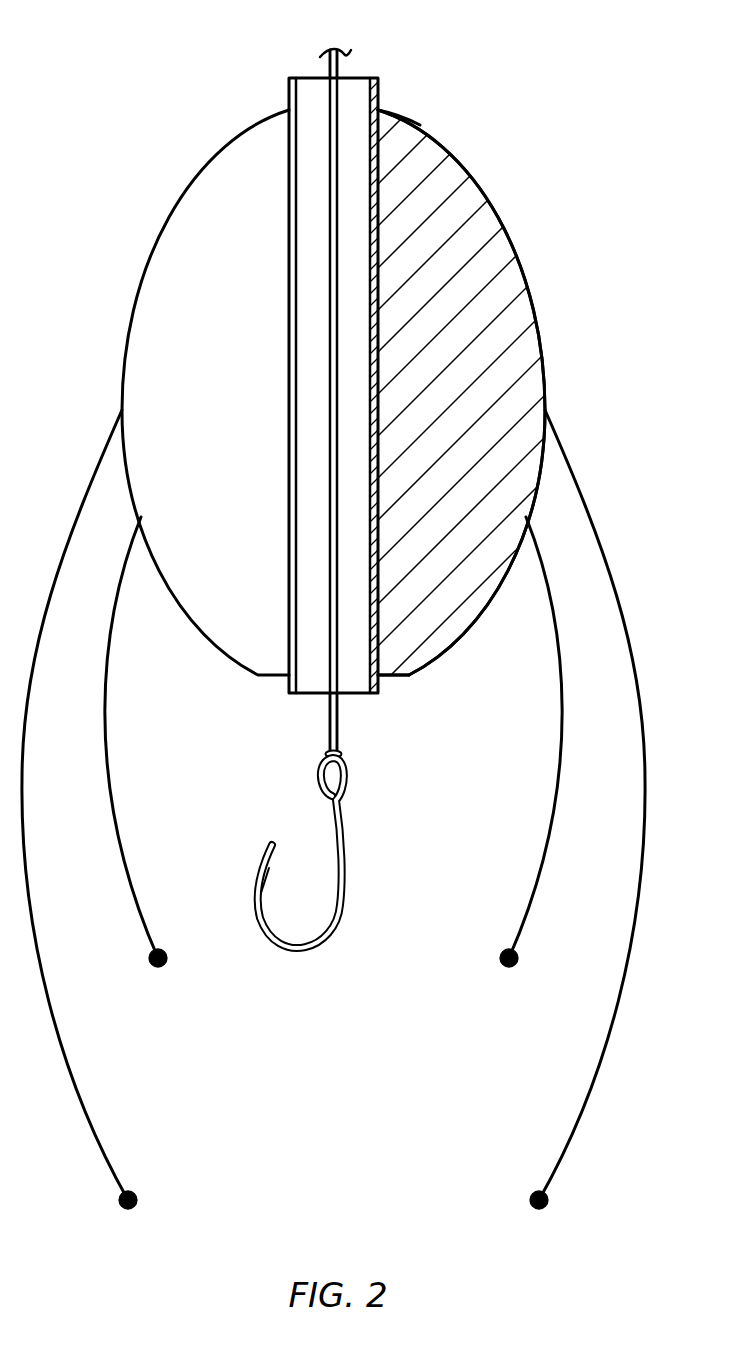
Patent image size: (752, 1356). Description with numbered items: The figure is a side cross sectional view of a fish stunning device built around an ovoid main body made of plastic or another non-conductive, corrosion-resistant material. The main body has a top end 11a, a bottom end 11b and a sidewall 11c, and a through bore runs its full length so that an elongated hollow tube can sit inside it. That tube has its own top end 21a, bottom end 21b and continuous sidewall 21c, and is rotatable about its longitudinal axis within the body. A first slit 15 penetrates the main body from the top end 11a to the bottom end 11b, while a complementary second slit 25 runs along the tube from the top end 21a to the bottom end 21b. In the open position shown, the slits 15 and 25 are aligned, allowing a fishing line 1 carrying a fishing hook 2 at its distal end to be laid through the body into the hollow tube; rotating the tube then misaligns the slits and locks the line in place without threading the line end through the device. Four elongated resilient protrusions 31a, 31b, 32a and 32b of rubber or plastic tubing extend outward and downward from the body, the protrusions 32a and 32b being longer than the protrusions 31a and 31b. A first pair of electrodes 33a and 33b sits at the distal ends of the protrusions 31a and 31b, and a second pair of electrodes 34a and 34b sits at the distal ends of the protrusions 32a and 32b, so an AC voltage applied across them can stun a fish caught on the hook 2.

The fishing line 1 is at (333, 710).
The fishing hook 2 is at (348, 868).
The top end 11a is at (393, 112).
The bottom end 11b is at (408, 677).
The sidewall 11c is at (508, 243).
The first slit 15 is at (206, 241).
The top end 21a is at (355, 78).
The bottom end 21b is at (303, 695).
The continuous sidewall 21c is at (382, 437).
The second slit 25 is at (292, 97).
The resilient protrusion 31a is at (104, 773).
The resilient protrusion 31b is at (563, 773).
The resilient protrusion 32a is at (52, 1029).
The resilient protrusion 32b is at (613, 1029).
The electrode 33a is at (166, 960).
The electrode 33b is at (499, 958).
The electrode 34a is at (135, 1193).
The electrode 34b is at (532, 1193).